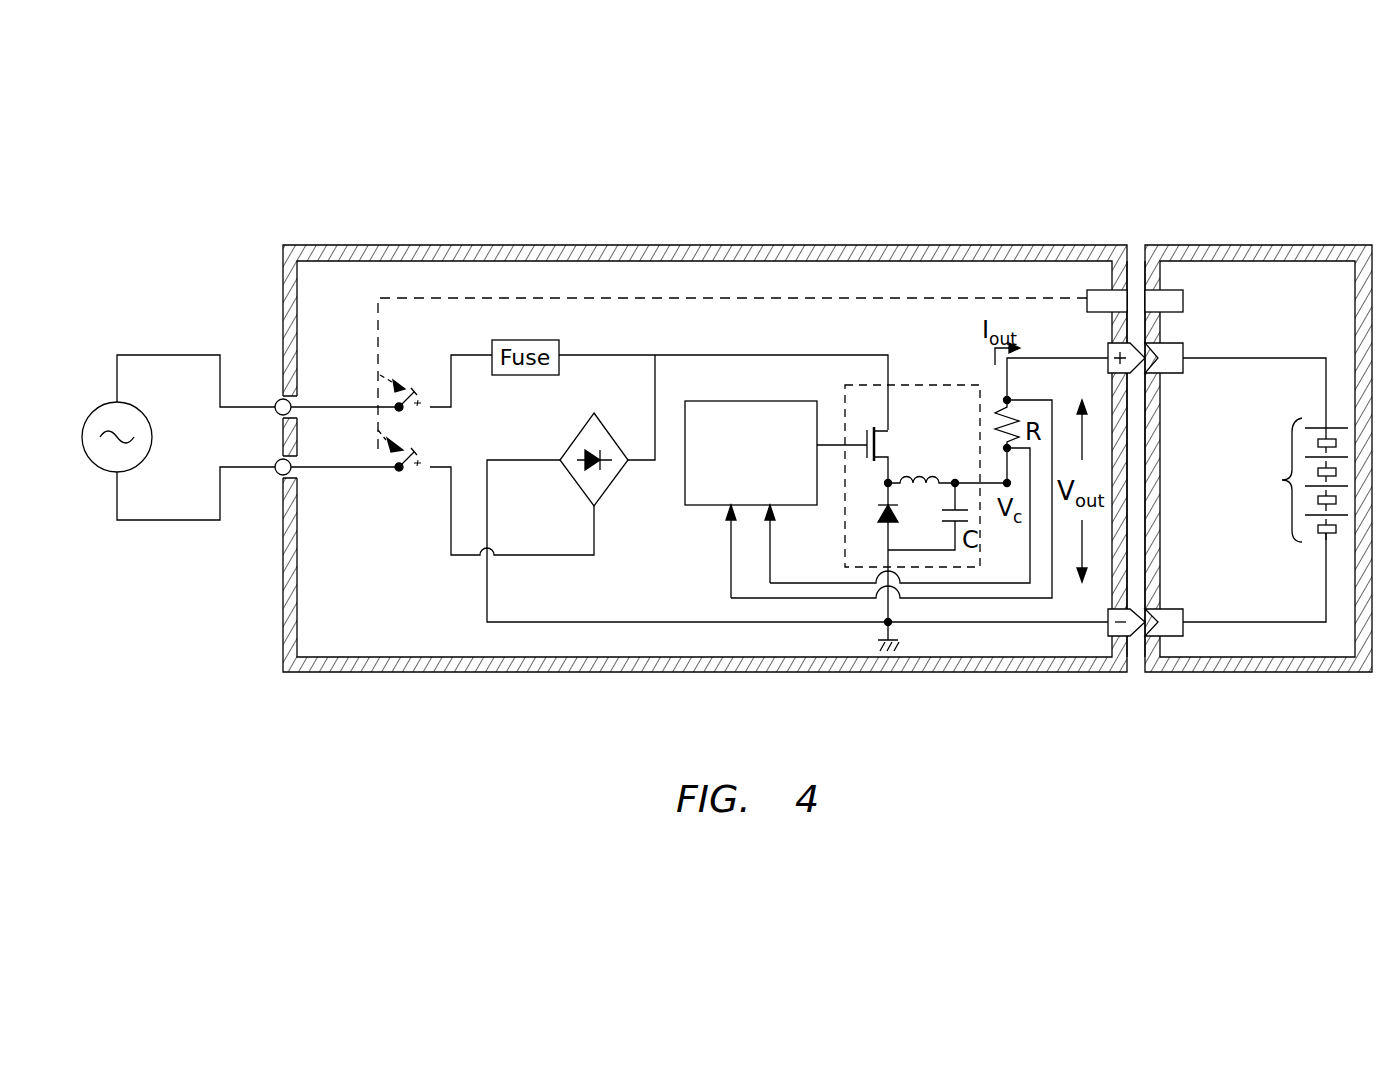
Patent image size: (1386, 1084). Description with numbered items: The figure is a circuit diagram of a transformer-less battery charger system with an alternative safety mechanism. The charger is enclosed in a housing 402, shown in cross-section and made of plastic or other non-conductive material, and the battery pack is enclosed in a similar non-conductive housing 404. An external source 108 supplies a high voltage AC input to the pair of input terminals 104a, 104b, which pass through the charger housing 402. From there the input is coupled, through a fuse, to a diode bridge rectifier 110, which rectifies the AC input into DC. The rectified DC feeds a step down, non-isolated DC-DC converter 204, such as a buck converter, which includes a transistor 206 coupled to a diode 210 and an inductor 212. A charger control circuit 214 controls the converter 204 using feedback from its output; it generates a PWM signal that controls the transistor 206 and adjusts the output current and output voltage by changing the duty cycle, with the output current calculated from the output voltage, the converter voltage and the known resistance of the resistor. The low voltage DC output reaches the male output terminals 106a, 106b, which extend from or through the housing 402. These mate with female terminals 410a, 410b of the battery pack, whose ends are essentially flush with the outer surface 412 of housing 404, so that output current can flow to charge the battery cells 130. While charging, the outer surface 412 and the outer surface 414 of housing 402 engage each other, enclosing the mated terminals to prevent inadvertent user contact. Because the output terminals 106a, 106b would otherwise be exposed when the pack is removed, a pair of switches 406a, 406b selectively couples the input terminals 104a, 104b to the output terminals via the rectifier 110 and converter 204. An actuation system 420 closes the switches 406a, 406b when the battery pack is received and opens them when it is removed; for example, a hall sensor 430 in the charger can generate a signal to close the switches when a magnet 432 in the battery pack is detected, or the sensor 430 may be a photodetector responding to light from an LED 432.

The external source 108 is at (100, 405).
The input terminal 104a is at (293, 405).
The input terminal 104b is at (290, 473).
The switch 406a is at (410, 390).
The switch 406b is at (420, 478).
The diode bridge rectifier 110 is at (577, 436).
The charger control circuit 214 is at (766, 400).
The non-isolated DC-DC converter 204 is at (905, 385).
The transistor 206 is at (880, 446).
The inductor 212 is at (924, 480).
The diode 210 is at (895, 513).
The housing 402 is at (733, 245).
The housing 404 is at (1308, 245).
The outer surface 414 is at (1131, 246).
The outer surface 412 is at (1143, 246).
The actuation system 420 is at (774, 289).
The hall sensor 430 is at (1090, 291).
The magnet 432 is at (1186, 307).
The male output terminal 106a is at (1105, 364).
The male output terminal 106b is at (1105, 632).
The female terminal 410a is at (1186, 366).
The female terminal 410b is at (1186, 612).
The battery cells 130 is at (1292, 480).